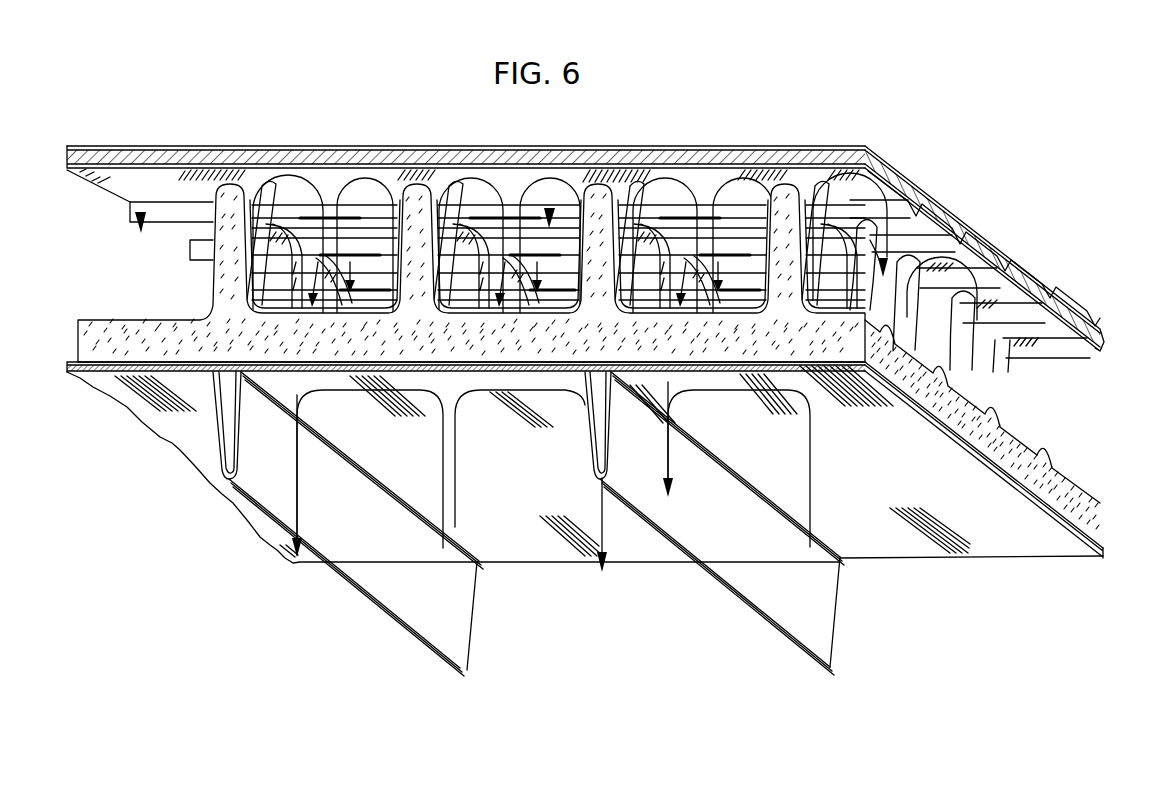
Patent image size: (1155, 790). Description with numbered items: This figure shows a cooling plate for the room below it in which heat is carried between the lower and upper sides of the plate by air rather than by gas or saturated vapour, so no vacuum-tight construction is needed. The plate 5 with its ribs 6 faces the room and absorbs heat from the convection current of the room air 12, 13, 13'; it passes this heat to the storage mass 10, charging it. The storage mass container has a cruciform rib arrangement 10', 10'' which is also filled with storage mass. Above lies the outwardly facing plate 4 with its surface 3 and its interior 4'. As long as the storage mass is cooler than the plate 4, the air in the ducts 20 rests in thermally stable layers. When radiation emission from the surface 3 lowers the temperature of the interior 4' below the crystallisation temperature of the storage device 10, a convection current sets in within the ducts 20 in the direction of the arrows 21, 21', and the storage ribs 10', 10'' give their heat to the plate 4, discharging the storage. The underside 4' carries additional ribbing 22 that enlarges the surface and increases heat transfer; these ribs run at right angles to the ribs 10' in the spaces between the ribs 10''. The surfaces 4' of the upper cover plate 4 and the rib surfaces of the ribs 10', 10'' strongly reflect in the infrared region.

The surface 3 is at (806, 146).
The outwardly facing plate 4 is at (466, 149).
The interior of the plate 4' is at (987, 248).
The plate 5 is at (718, 368).
The ribs 6 is at (604, 455).
The storage mass 10 is at (590, 366).
The storage rib 10' is at (559, 211).
The storage rib 10'' is at (582, 211).
The convection current of room air 12 is at (455, 523).
The convection current of room air 13 is at (319, 476).
The convection current of room air 13' is at (580, 525).
The ducts 20 is at (141, 230).
The arrow 21 is at (736, 215).
The arrow 21' is at (315, 211).
The additional ribbing 22 is at (917, 202).